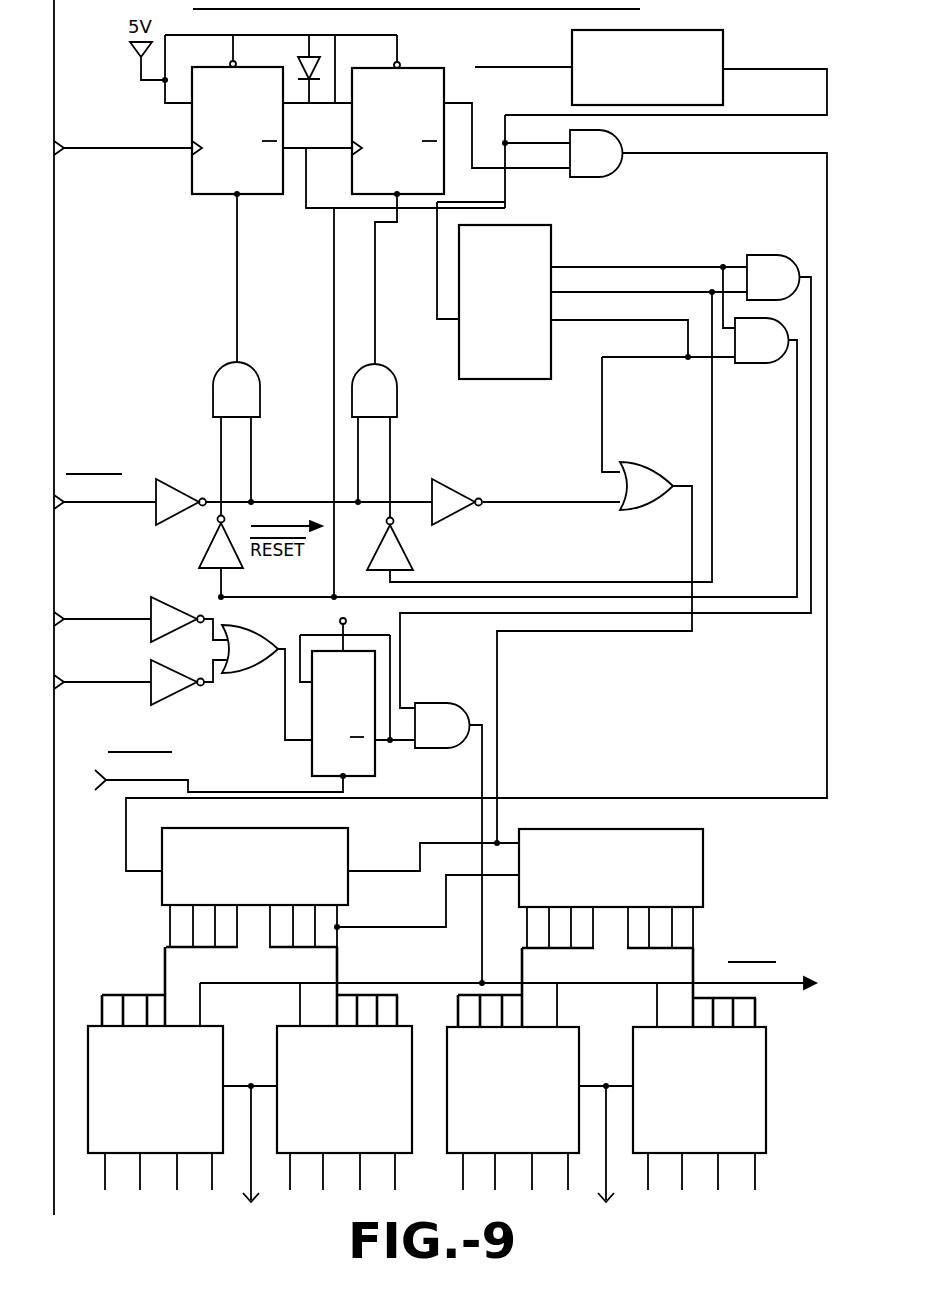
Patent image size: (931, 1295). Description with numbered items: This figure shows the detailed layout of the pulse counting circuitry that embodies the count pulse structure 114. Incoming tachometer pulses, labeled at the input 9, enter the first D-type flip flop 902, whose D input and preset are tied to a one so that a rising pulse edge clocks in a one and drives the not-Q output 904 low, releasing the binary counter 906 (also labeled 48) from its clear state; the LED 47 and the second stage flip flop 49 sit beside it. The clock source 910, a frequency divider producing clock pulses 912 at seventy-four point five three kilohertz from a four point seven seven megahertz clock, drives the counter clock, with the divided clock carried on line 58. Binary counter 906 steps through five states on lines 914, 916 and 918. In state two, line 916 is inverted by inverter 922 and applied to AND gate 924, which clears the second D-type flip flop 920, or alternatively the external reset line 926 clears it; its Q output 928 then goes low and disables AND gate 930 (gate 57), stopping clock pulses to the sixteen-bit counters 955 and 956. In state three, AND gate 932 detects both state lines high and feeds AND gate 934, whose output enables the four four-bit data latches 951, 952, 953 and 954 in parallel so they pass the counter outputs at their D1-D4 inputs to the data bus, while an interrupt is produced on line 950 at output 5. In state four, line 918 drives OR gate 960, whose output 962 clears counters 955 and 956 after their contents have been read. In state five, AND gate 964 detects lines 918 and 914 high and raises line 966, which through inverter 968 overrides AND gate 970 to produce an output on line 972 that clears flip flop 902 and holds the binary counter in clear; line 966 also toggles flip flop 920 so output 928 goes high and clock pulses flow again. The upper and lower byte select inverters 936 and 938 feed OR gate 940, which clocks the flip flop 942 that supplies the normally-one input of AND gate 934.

The NCT or CT pulse input 9 is at (118, 147).
The D-type flip flop 902 is at (208, 196).
The not-Q output 904 is at (270, 210).
The LED 47 is at (307, 144).
The second D flip-flop 49 is at (440, 64).
The second D-type flip flop 920 is at (411, 197).
The Q output 928 is at (472, 110).
The divided clock signal line 58 is at (540, 104).
The clock source 910 is at (727, 33).
The clock pulses 912 is at (773, 116).
The AND gate J 57 is at (624, 138).
The AND gate 930 is at (626, 176).
The binary counter 48 is at (548, 225).
The binary counter 906 is at (458, 362).
The AND gate 924 is at (397, 410).
The line 914 is at (686, 254).
The line 916 is at (720, 290).
The line 918 is at (575, 322).
The AND gate 932 is at (768, 255).
The AND gate 964 is at (765, 363).
The line 966 is at (796, 482).
The OR gate 960 is at (660, 462).
The output 962 is at (690, 548).
The reset line 926 is at (150, 484).
The AND gate 970 is at (214, 386).
The line 972 is at (237, 338).
The count pulse structure 114 is at (54, 400).
The inverter 968 is at (206, 548).
The inverter 922 is at (413, 548).
The upper byte inverter 936 is at (145, 606).
The lower byte inverter 938 is at (120, 684).
The OR gate 940 is at (260, 630).
The D flip-flop 942 is at (377, 750).
The AND gate 934 is at (430, 702).
The 16-bit counter 955 is at (350, 842).
The 16-bit counter 956 is at (706, 846).
The IRQ2 interrupt output 5 is at (792, 980).
The line 950 is at (482, 948).
The four-bit data latch 951 is at (224, 1044).
The four-bit data latch 952 is at (400, 1025).
The four-bit data latch 953 is at (582, 1044).
The four-bit data latch 954 is at (768, 1042).